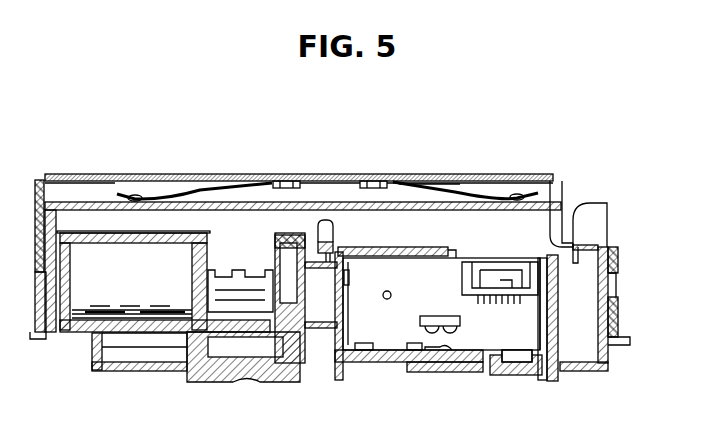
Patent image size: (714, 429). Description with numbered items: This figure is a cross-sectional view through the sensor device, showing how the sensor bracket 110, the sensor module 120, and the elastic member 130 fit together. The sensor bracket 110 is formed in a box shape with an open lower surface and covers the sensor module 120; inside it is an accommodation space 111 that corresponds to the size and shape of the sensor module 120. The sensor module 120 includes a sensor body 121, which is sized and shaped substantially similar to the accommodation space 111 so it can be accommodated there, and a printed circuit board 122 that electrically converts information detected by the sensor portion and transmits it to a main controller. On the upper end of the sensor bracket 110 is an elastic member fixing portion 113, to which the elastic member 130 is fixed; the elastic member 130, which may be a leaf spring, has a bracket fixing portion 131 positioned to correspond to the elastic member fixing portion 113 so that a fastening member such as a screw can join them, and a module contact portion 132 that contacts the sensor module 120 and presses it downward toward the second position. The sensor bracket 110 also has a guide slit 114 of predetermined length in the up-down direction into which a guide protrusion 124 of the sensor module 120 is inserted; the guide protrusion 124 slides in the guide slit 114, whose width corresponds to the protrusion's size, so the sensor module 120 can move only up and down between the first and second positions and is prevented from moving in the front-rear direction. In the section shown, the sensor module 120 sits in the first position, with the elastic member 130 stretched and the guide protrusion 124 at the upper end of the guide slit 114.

The sensor bracket 110 is at (556, 172).
The accommodation space 111 is at (90, 191).
The elastic member fixing portion 113 is at (371, 181).
The guide slit 114 is at (619, 308).
The sensor module 120 is at (614, 212).
The sensor body 121 is at (155, 212).
The printed circuit board 122 is at (394, 338).
The guide protrusion 124 is at (619, 283).
The elastic member 130 is at (458, 182).
The bracket fixing portion 131 is at (278, 181).
The module contact portion 132 is at (131, 194).